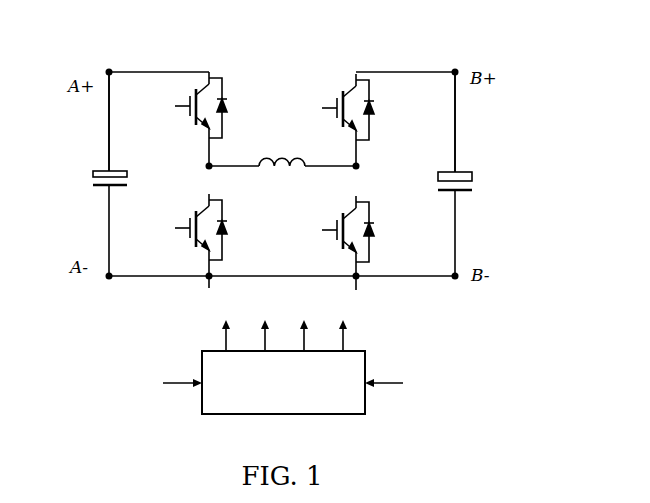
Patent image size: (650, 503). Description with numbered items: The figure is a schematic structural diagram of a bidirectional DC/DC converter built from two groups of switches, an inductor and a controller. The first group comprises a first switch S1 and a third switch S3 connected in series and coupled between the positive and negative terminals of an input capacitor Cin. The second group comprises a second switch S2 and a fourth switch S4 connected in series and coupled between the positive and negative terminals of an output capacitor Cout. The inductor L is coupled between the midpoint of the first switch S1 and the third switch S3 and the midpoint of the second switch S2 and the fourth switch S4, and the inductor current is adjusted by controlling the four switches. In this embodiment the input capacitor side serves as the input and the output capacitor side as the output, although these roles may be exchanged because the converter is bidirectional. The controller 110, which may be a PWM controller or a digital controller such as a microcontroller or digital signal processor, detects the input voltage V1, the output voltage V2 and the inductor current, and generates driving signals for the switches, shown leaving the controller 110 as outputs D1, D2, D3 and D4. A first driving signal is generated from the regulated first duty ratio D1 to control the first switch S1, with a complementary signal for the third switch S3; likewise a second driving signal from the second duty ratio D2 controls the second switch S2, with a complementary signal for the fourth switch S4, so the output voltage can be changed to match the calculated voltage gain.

The controller 110 is at (283, 382).
The first switch S1 is at (215, 119).
The second switch S2 is at (362, 121).
The third switch S3 is at (215, 241).
The fourth switch S4 is at (362, 243).
The inductor L is at (282, 150).
The input capacitor Cin is at (123, 187).
The output capacitor Cout is at (442, 190).
The input voltage V1 is at (87, 135).
The output voltage V2 is at (479, 130).
The first duty ratio D1 is at (221, 323).
The second duty ratio D2 is at (261, 323).
The third drive signal D3 is at (301, 323).
The fourth drive signal D4 is at (341, 323).